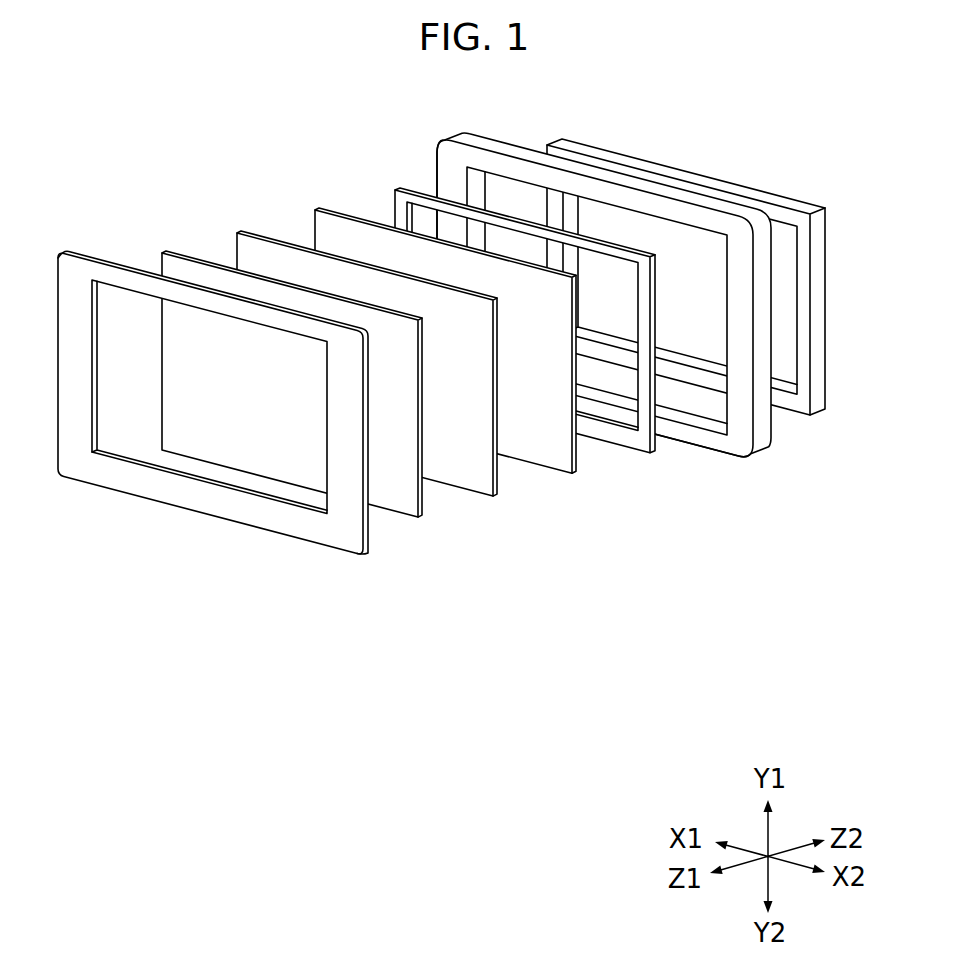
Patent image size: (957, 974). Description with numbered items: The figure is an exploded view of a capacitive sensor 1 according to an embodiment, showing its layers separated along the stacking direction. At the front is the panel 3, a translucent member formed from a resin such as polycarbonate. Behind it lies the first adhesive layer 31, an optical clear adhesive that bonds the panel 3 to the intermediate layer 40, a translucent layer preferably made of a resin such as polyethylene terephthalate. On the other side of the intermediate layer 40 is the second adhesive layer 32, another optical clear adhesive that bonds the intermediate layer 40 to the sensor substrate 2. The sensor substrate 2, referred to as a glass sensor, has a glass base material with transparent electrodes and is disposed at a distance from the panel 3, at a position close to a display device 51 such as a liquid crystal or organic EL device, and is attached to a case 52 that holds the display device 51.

The capacitive sensor 1 is at (444, 428).
The sensor substrate 2 is at (655, 453).
The panel 3 is at (213, 457).
The first adhesive layer 31 is at (422, 518).
The second adhesive layer 32 is at (575, 473).
The intermediate layer 40 is at (497, 495).
The display device 51 is at (818, 418).
The case 52 is at (760, 463).